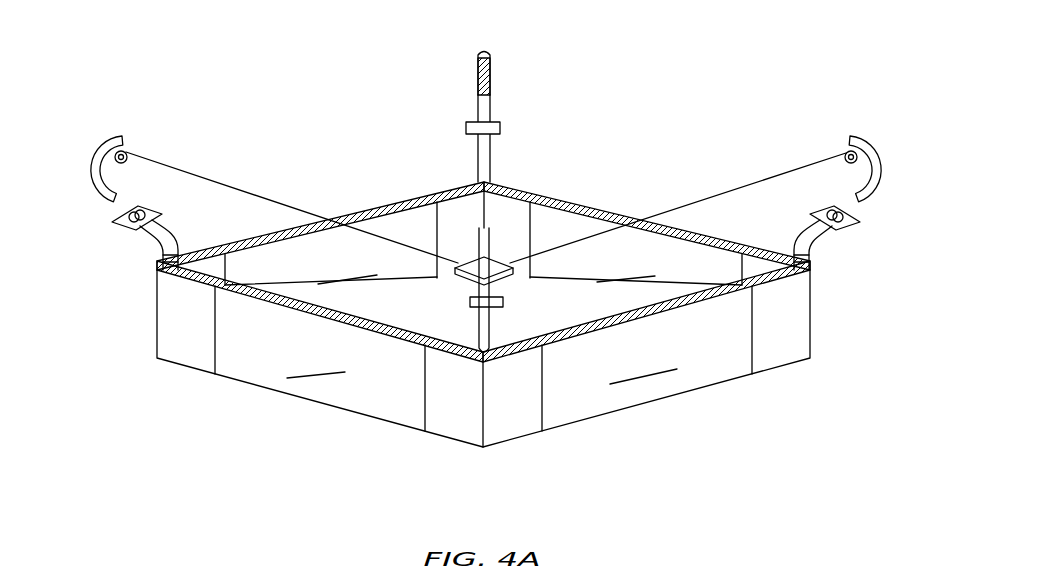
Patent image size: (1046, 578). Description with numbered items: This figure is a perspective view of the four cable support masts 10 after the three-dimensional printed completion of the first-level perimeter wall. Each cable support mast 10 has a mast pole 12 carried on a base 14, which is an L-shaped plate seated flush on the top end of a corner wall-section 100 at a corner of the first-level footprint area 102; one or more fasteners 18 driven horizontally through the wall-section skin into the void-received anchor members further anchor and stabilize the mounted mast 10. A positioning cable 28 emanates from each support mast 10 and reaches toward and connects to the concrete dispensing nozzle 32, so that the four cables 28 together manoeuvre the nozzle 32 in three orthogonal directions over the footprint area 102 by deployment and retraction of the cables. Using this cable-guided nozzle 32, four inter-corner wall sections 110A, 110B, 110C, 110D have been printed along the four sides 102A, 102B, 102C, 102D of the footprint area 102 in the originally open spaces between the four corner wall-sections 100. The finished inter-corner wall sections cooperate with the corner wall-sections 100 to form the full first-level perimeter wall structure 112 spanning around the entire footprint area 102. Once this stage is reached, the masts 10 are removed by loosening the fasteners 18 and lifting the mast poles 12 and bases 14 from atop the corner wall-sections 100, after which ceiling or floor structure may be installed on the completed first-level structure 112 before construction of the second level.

The cable support mast 10 is at (78, 146).
The mast pole 12 is at (103, 207).
The base 14 is at (188, 262).
The fastener 18 is at (441, 243).
The positioning cable 28 is at (202, 177).
The concrete dispensing nozzle 32 is at (492, 257).
The corner wall-section 100 is at (183, 344).
The first-level footprint area 102 is at (524, 296).
The side of the first-level footprint area 102A is at (380, 293).
The side of the first-level footprint area 102B is at (318, 400).
The side of the first-level footprint area 102C is at (623, 407).
The side of the first-level footprint area 102D is at (580, 300).
The inter-corner wall section 110A is at (347, 268).
The inter-corner wall section 110B is at (316, 363).
The inter-corner wall section 110C is at (643, 366).
The inter-corner wall section 110D is at (624, 265).
The first-level perimeter wall structure 112 is at (249, 385).